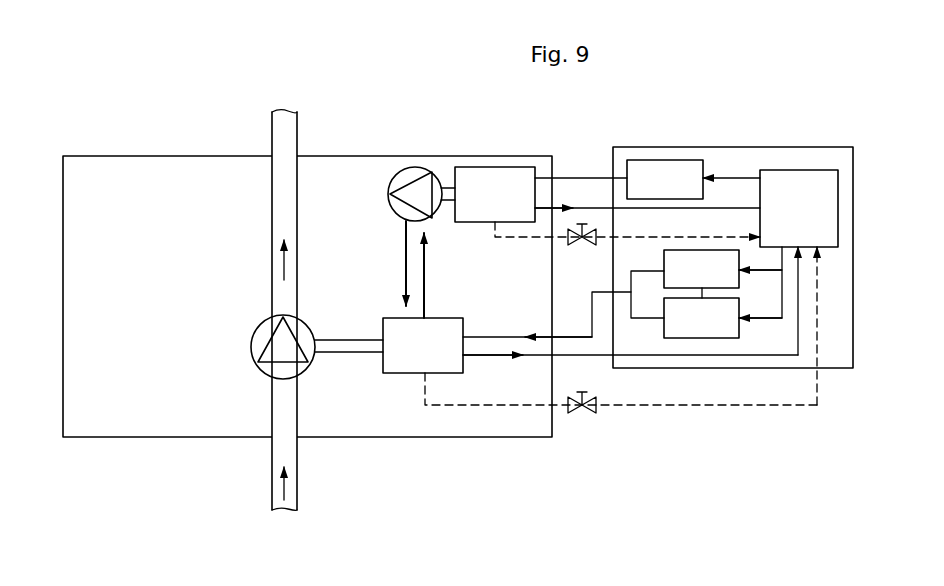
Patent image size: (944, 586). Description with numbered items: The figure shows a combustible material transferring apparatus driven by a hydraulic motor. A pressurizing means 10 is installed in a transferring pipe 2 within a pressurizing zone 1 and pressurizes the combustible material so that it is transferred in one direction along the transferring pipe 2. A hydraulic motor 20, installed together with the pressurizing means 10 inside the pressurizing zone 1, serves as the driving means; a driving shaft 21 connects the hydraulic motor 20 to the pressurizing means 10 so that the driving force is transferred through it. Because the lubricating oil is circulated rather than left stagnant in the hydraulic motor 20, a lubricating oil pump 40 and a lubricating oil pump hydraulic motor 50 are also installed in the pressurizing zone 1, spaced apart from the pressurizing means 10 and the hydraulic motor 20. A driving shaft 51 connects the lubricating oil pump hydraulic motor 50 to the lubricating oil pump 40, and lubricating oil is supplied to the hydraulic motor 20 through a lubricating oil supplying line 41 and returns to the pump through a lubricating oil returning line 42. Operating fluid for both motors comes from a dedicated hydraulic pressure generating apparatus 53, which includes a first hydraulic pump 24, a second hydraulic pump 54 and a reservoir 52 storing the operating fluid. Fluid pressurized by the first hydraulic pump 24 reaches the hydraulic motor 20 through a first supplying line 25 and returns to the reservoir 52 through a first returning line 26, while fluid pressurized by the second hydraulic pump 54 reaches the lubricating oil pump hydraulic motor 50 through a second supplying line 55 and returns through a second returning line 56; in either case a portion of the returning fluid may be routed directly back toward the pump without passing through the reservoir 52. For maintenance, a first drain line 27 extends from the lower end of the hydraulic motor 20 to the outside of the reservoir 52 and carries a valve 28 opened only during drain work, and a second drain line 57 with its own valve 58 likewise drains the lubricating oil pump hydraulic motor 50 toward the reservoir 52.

The pressurizing zone 1 is at (100, 259).
The transferring pipe 2 is at (272, 207).
The pressurizing means 10 is at (251, 347).
The hydraulic motor 20 is at (400, 373).
The driving shaft 21 is at (348, 340).
The first hydraulic pump 24 is at (664, 262).
The first supplying line 25 is at (487, 337).
The first returning line 26 is at (487, 355).
The first drain line 27 is at (705, 405).
The valve 28 is at (582, 413).
The lubricating oil pump 40 is at (412, 168).
The lubricating oil supplying line 41 is at (406, 263).
The lubricating oil returning line 42 is at (424, 263).
The lubricating oil pump hydraulic motor 50 is at (495, 167).
The driving shaft 51 is at (446, 188).
The reservoir 52 is at (798, 170).
The dedicated hydraulic pressure generating apparatus 53 is at (733, 147).
The second hydraulic pump 54 is at (667, 160).
The second supplying line 55 is at (563, 178).
The second returning line 56 is at (597, 208).
The second drain line 57 is at (523, 237).
The valve 58 is at (582, 246).